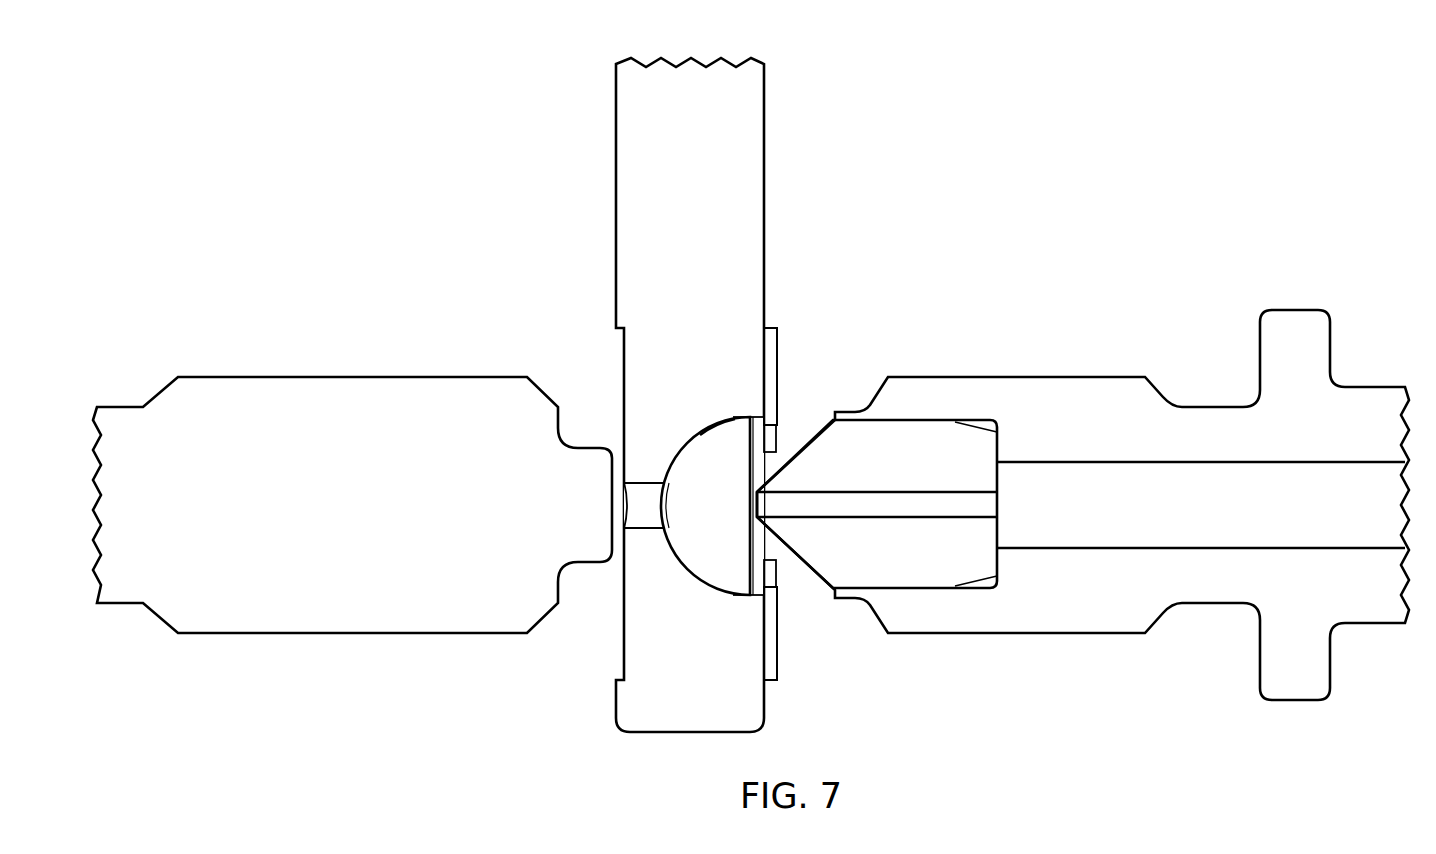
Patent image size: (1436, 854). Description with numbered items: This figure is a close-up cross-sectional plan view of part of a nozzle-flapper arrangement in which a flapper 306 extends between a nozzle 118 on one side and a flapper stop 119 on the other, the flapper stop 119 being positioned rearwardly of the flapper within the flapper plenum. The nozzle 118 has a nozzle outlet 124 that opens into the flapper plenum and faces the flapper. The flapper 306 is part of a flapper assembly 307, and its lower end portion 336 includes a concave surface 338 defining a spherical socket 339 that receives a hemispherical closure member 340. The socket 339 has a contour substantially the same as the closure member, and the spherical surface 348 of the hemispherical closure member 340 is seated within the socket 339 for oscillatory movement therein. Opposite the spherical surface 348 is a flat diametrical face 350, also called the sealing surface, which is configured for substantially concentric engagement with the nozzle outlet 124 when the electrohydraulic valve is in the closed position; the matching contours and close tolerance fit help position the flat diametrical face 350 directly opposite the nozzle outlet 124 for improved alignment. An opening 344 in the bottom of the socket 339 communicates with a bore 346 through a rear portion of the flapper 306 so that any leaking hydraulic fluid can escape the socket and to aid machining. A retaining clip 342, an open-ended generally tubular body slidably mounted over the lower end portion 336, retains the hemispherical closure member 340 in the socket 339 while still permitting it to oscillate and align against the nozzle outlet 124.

The nozzle 118 is at (1064, 359).
The flapper stop 119 is at (331, 359).
The nozzle outlet 124 is at (767, 505).
The flapper 306 is at (731, 395).
The flapper assembly 307 is at (830, 486).
The lower end portion 336 is at (718, 268).
The concave surface 338 is at (728, 415).
The spherical socket 339 is at (727, 596).
The hemispherical closure member 340 is at (738, 498).
The retaining clip 342 is at (777, 637).
The opening 344 is at (663, 507).
The bore 346 is at (642, 521).
The spherical surface 348 is at (703, 433).
The flat diametrical face 350 is at (750, 570).